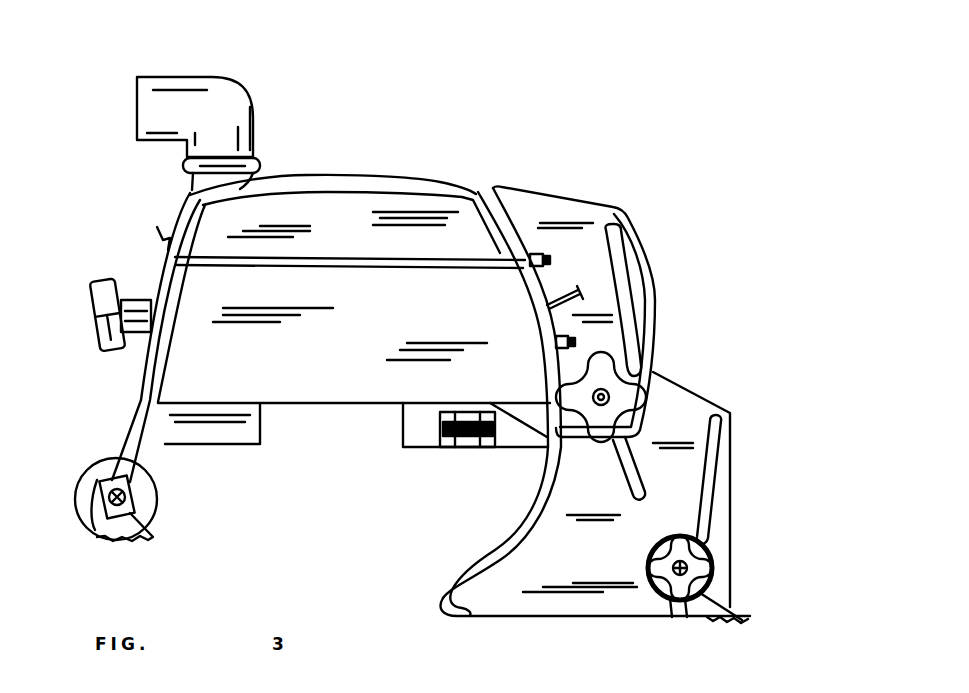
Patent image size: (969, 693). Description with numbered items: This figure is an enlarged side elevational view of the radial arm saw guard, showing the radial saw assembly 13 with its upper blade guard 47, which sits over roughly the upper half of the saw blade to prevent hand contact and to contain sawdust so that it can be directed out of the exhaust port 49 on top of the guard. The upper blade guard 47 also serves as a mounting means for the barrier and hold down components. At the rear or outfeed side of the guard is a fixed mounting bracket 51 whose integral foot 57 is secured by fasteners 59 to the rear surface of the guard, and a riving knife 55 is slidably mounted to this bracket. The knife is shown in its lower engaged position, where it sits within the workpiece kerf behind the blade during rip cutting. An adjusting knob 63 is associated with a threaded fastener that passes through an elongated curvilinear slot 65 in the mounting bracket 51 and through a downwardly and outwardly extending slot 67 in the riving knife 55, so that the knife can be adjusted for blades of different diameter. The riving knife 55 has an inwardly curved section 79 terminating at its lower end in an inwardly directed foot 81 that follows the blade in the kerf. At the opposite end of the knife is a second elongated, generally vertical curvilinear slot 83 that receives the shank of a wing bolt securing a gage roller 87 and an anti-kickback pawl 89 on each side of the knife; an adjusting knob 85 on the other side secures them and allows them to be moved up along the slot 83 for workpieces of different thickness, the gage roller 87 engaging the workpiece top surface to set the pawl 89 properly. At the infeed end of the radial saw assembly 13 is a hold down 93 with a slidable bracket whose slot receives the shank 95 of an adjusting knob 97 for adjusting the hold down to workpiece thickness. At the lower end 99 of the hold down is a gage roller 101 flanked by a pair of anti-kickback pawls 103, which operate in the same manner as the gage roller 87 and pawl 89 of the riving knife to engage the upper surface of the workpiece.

The radial saw assembly 13 is at (595, 140).
The upper blade guard 47 is at (304, 213).
The exhaust port 49 is at (173, 103).
The fixed mounting bracket 51 is at (548, 204).
The riving knife 55 is at (680, 402).
The integral foot 57 is at (547, 307).
The fasteners 59 is at (531, 256).
The adjusting knob 63 is at (607, 377).
The elongated curvilinear slot 65 is at (627, 277).
The downwardly and outwardly extending slot 67 is at (627, 490).
The inwardly curved section 79 is at (493, 550).
The inwardly directed foot 81 is at (440, 600).
The second elongated curvilinear slot 83 is at (710, 473).
The adjusting knob 85 is at (683, 600).
The gage roller 87 is at (710, 550).
The anti-kickback pawl 89 is at (748, 618).
The hold down 93 is at (140, 415).
The shank 95 is at (140, 300).
The adjusting knob 97 is at (93, 330).
The lower end 99 is at (130, 500).
The gage roller 101 is at (83, 493).
The anti-kickback pawls 103 is at (150, 537).